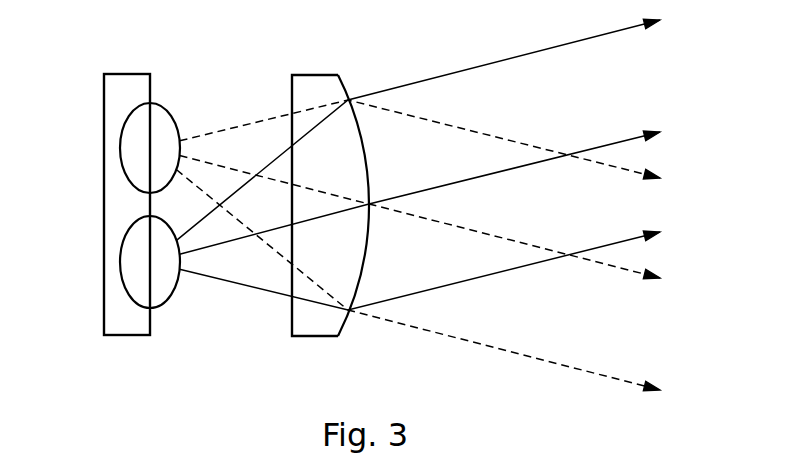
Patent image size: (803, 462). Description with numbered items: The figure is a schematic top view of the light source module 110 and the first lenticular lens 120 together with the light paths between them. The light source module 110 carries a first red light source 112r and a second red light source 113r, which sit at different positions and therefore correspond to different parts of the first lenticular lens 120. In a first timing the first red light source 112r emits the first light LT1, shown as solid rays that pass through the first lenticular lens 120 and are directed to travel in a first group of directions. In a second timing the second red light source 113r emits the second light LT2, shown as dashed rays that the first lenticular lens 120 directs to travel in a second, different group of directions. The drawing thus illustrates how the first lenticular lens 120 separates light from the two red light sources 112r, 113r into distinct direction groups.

The light source module 110 is at (130, 336).
The second red light source 113r is at (135, 148).
The first red light source 112r is at (135, 262).
The first lenticular lens 120 is at (313, 327).
The first light LT1 is at (619, 31).
The second light LT2 is at (620, 381).